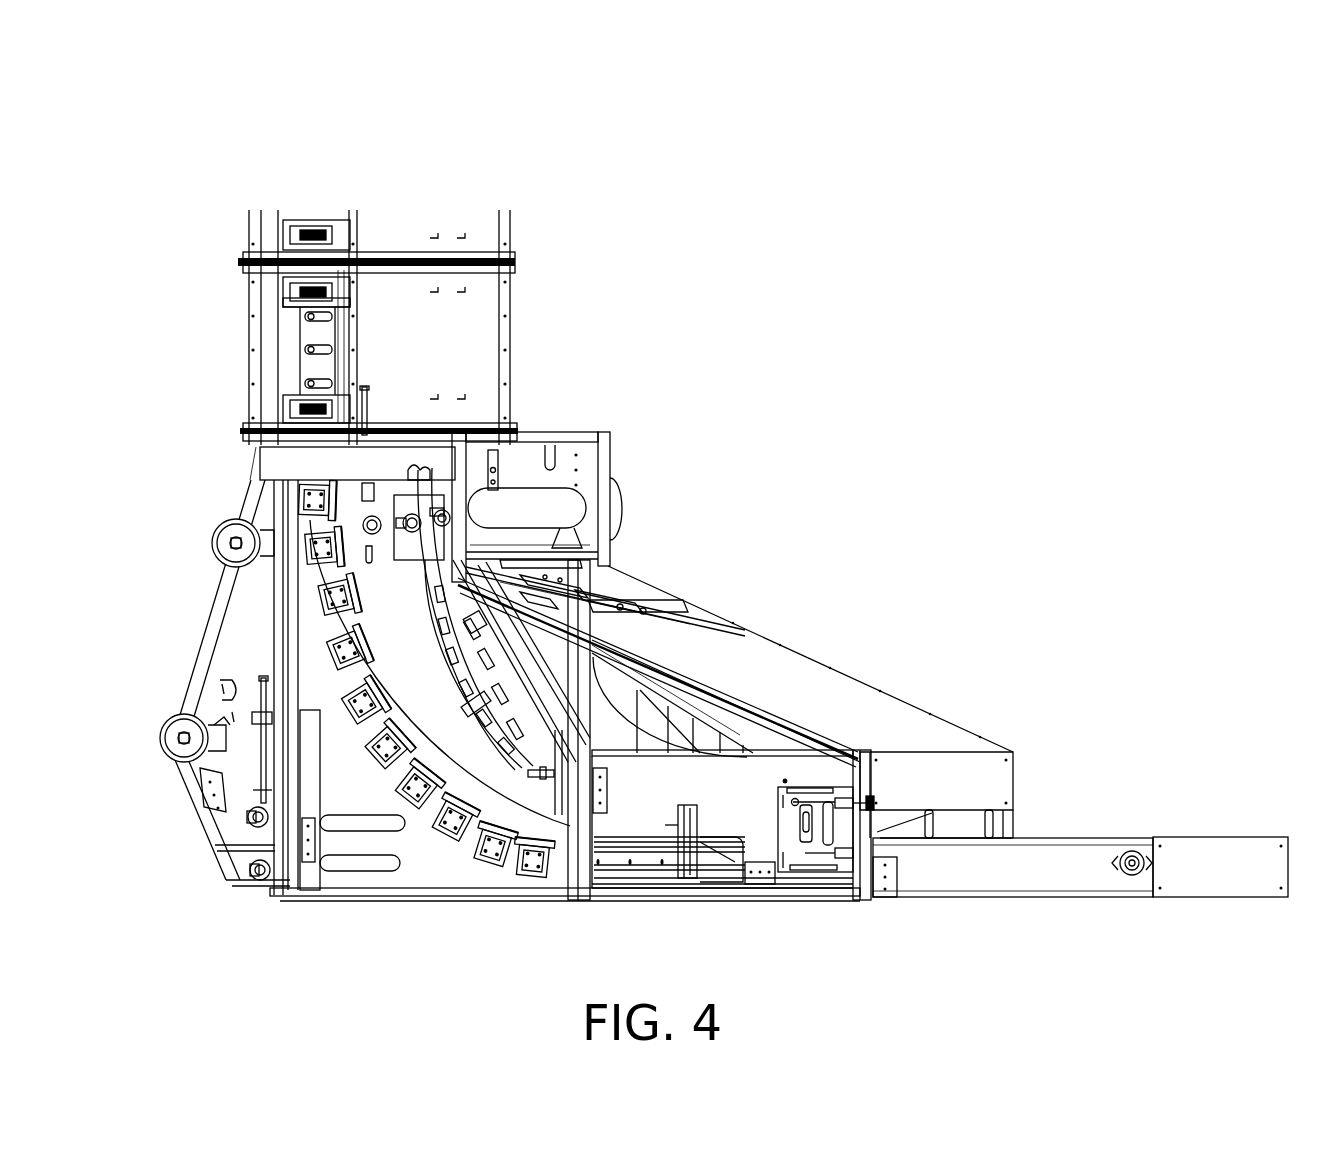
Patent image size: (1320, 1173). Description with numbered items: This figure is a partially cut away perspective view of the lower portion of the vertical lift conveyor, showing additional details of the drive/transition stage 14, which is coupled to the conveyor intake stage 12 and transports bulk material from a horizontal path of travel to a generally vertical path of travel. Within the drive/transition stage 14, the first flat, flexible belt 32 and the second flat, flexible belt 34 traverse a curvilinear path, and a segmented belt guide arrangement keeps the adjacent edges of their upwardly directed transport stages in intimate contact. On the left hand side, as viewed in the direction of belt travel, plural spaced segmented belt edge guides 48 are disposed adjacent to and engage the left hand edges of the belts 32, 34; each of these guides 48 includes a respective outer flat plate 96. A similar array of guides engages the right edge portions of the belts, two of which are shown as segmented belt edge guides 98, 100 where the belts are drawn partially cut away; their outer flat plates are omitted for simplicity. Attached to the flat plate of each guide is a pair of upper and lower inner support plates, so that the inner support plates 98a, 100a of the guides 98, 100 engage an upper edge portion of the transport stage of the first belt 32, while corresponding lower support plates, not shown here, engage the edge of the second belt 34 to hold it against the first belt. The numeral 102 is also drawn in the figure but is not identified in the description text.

The conveyor intake stage 12 is at (1068, 706).
The drive/transition stage 14 is at (740, 500).
The first flat, flexible belt 32 is at (450, 627).
The second flat, flexible belt 34 is at (446, 640).
The segmented belt edge guides 48 is at (513, 880).
The outer flat plate 96 is at (375, 895).
The segmented belt edge guide 98 is at (480, 652).
The inner support plate 98a is at (460, 667).
The segmented belt edge guide 100 is at (489, 692).
The inner support plate 100a is at (472, 697).
The chain 102 is at (441, 717).